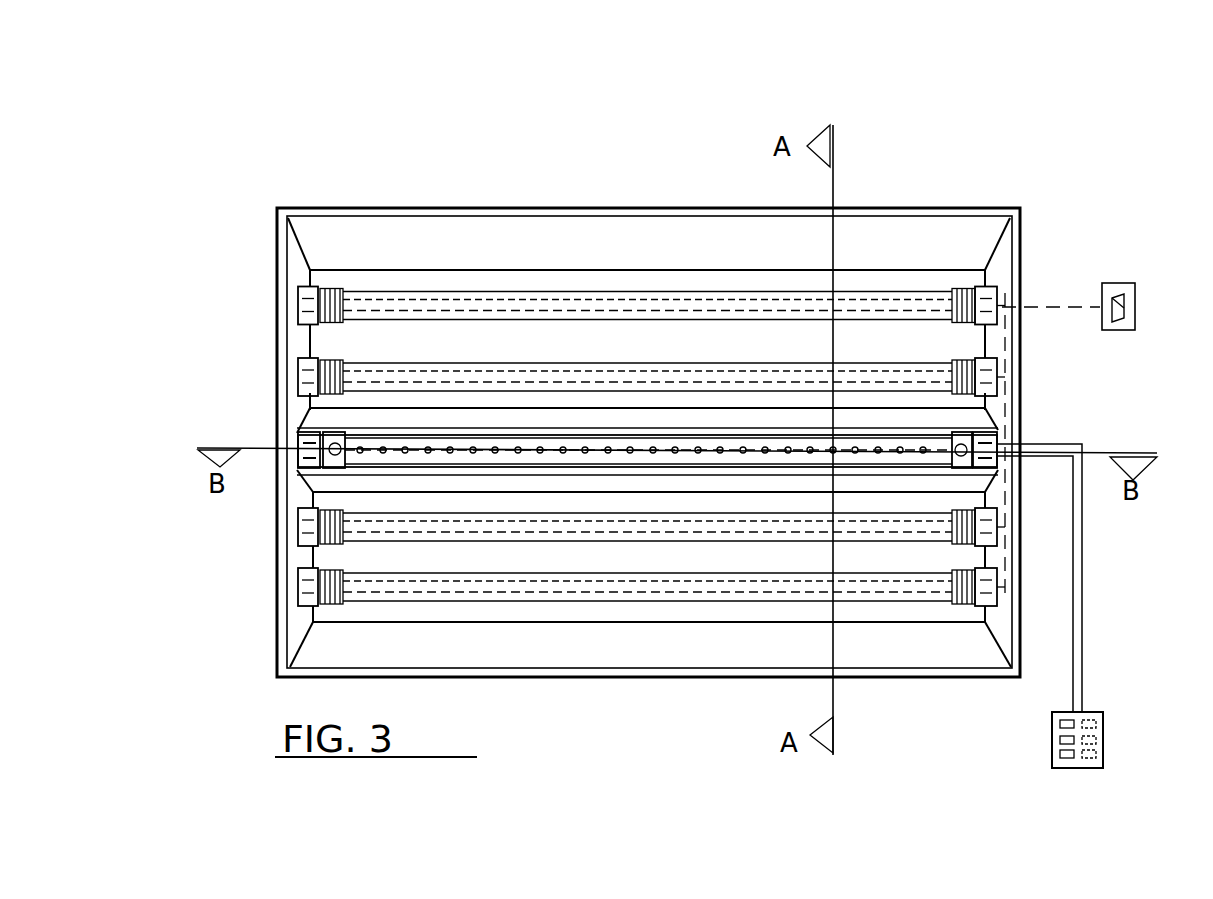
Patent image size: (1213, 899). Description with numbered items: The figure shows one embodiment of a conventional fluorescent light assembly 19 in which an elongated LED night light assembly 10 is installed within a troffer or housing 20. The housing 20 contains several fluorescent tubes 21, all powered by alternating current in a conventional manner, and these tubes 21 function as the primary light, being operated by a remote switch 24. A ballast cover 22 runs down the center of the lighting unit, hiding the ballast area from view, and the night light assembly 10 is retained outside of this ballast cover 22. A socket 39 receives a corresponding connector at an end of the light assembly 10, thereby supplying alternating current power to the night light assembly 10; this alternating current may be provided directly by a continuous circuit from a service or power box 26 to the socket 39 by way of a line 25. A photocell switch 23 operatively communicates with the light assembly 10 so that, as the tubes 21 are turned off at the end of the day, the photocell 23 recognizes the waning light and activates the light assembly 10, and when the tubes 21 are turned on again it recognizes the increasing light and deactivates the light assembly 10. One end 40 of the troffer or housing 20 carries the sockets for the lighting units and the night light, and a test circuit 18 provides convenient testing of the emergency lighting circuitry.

The LED night light assembly 10 is at (497, 446).
The test circuit 18 is at (652, 460).
The fluorescent light assembly 19 is at (547, 648).
The troffer or housing 20 is at (610, 188).
The fluorescent tubes 21 is at (443, 377).
The ballast cover 22 is at (708, 432).
The photocell switch 23 is at (961, 434).
The remote switch 24 is at (1118, 282).
The line 25 is at (1084, 618).
The service/power box 26 is at (1097, 735).
The socket 39 is at (297, 440).
The end of the troffer or housing 40 is at (272, 282).